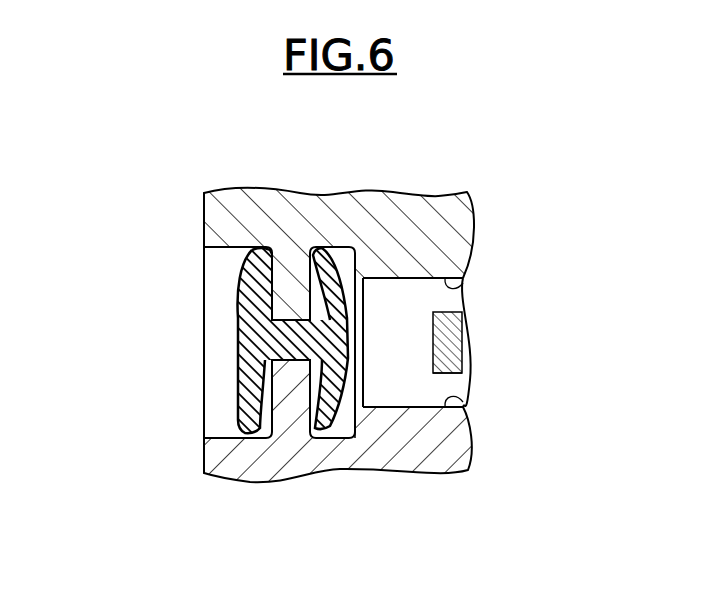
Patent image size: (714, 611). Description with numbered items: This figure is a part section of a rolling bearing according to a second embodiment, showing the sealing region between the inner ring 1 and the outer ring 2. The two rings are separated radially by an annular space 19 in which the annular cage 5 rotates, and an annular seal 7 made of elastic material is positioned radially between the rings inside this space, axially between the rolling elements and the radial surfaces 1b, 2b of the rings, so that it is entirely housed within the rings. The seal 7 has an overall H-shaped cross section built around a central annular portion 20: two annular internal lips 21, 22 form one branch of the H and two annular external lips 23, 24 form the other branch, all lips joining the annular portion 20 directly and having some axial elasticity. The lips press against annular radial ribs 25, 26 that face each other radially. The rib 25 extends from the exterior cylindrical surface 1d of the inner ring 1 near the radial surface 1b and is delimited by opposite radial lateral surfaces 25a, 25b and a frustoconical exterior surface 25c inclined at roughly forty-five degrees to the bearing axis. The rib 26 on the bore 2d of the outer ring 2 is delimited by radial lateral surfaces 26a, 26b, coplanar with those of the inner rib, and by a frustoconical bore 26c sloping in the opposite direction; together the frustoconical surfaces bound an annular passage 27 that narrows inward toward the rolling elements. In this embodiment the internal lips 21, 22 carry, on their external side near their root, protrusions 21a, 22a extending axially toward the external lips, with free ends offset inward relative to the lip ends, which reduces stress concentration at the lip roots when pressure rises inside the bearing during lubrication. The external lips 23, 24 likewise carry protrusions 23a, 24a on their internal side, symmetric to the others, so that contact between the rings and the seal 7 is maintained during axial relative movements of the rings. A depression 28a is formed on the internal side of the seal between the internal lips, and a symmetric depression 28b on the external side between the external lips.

The inner ring 1 is at (446, 425).
The radial surface 1b is at (204, 460).
The exterior cylindrical surface 1d is at (447, 390).
The outer ring 2 is at (446, 228).
The radial surface 2b is at (204, 197).
The bore 2d is at (460, 281).
The annular cage 5 is at (447, 332).
The annular seal 7 is at (237, 320).
The annular space 19 is at (407, 299).
The annular portion 20 is at (245, 358).
The annular internal lip 21 is at (352, 400).
The protrusion 21a is at (378, 422).
The annular internal lip 22 is at (343, 290).
The protrusion 22a is at (363, 282).
The annular external lip 23 is at (250, 418).
The protrusion 23a is at (250, 393).
The annular external lip 24 is at (250, 257).
The protrusion 24a is at (248, 297).
The annular rib 25 is at (306, 375).
The radial lateral surface 25a is at (345, 420).
The radial lateral surface 25b is at (250, 438).
The frustoconical exterior surface 25c is at (300, 385).
The annular rib 26 is at (303, 303).
The radial lateral surface 26a is at (330, 275).
The radial lateral surface 26b is at (255, 268).
The frustoconical bore 26c is at (300, 320).
The annular passage 27 is at (248, 375).
The depression 28a is at (450, 374).
The depression 28b is at (250, 341).